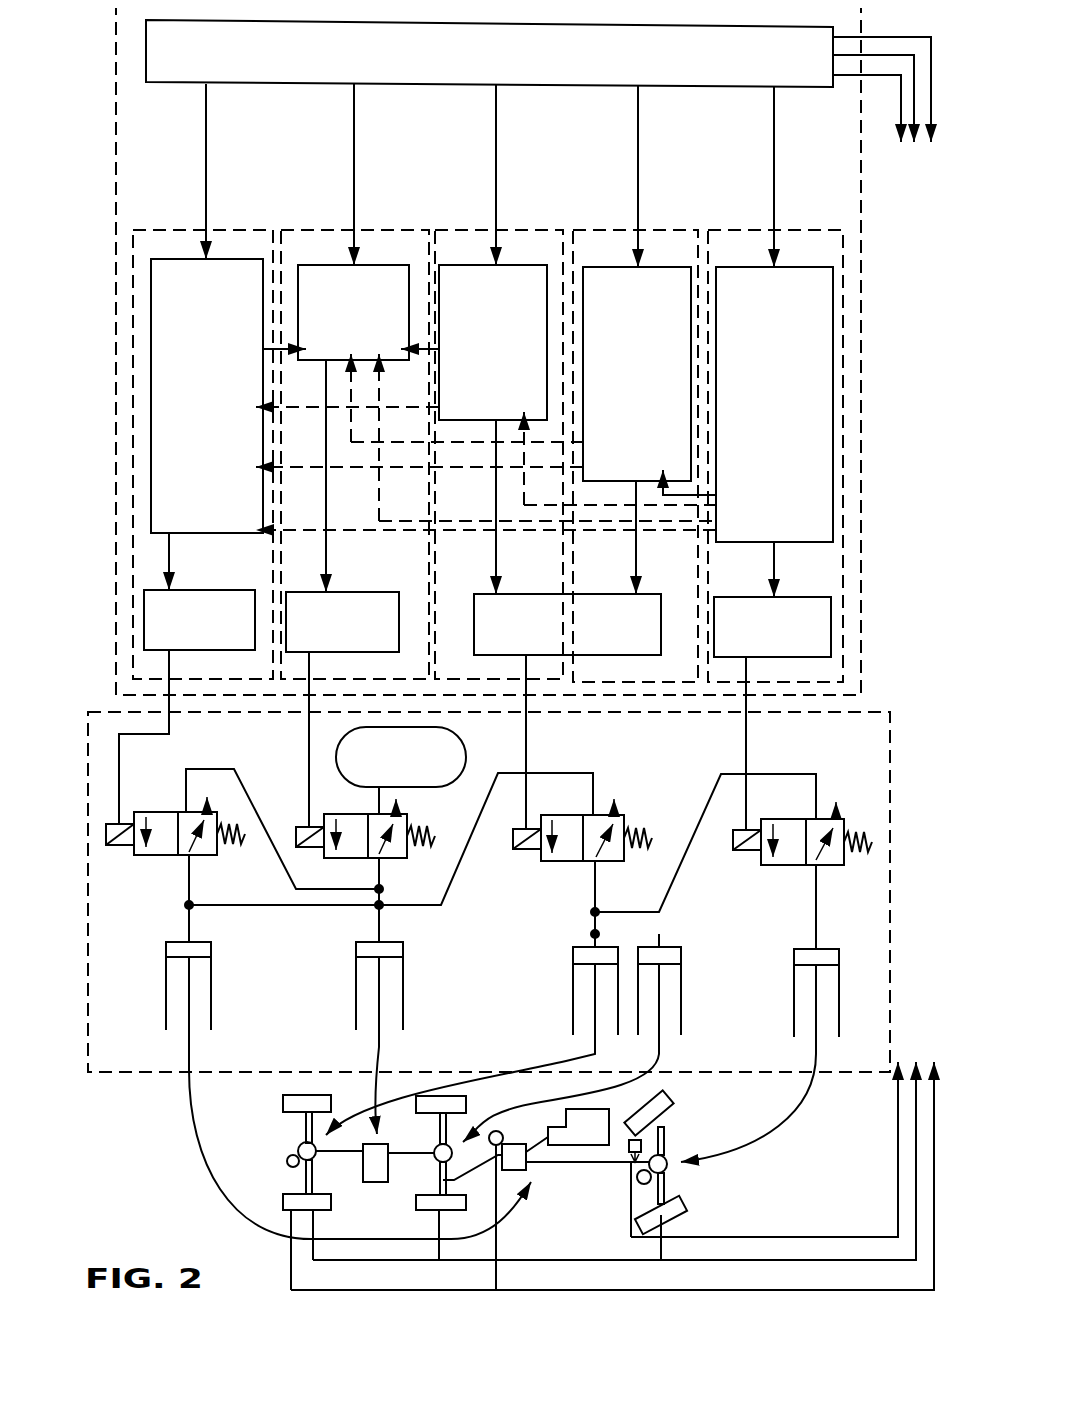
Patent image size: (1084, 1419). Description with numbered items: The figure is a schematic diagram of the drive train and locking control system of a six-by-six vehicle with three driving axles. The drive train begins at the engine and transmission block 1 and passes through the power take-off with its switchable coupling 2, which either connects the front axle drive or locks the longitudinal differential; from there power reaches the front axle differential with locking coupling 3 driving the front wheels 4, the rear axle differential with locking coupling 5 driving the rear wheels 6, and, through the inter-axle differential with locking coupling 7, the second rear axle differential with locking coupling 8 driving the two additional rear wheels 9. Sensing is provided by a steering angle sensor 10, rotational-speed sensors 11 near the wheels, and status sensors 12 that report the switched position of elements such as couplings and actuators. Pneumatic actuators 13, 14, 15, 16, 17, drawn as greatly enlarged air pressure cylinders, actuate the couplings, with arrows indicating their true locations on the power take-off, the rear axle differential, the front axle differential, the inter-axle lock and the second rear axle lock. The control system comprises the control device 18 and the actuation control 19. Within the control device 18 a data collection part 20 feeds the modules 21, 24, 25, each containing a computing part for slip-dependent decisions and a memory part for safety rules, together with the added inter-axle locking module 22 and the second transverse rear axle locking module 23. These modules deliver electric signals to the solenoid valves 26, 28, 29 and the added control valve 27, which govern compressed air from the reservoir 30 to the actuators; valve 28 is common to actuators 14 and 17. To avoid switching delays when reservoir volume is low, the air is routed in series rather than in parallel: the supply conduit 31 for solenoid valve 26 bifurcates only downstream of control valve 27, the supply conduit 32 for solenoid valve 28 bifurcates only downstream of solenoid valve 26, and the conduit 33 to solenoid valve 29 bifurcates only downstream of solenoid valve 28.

The engine and transmission block 1 is at (580, 1143).
The switchable coupling 2 is at (575, 1192).
The front axle differential with locking coupling 3 is at (667, 1163).
The front wheels 4 is at (665, 1115).
The rear axle differential with locking coupling 5 is at (298, 1148).
The rear wheels 6 is at (282, 1100).
The inter-axle differential with locking coupling 7 is at (372, 1180).
The second rear axle differential with locking coupling 8 is at (432, 1160).
The additional rear wheels 9 is at (440, 1094).
The steering angle sensor 10 is at (633, 1150).
The rotational-speed sensors 11 is at (418, 1094).
The status sensors 12 is at (286, 1160).
The actuator 13 is at (212, 973).
The actuator 14 is at (572, 993).
The actuator 15 is at (793, 1010).
The actuator 16 is at (402, 975).
The actuator 17 is at (680, 975).
The control device 18 is at (860, 400).
The actuation control 19 is at (893, 748).
The data collection part 20 is at (810, 50).
The module 21 is at (226, 228).
The inter-axle locking module 22 is at (393, 228).
The second transverse rear axle locking module 23 is at (540, 228).
The module 24 is at (668, 228).
The module 25 is at (820, 228).
The solenoid valve 26 is at (178, 808).
The control valve 27 is at (340, 812).
The solenoid valve 28 is at (578, 813).
The solenoid valve 29 is at (800, 817).
The reservoir 30 is at (462, 755).
The compressed-air supply conduit 31 is at (272, 862).
The compressed-air supply conduit 32 is at (450, 885).
The conduit 33 is at (680, 865).